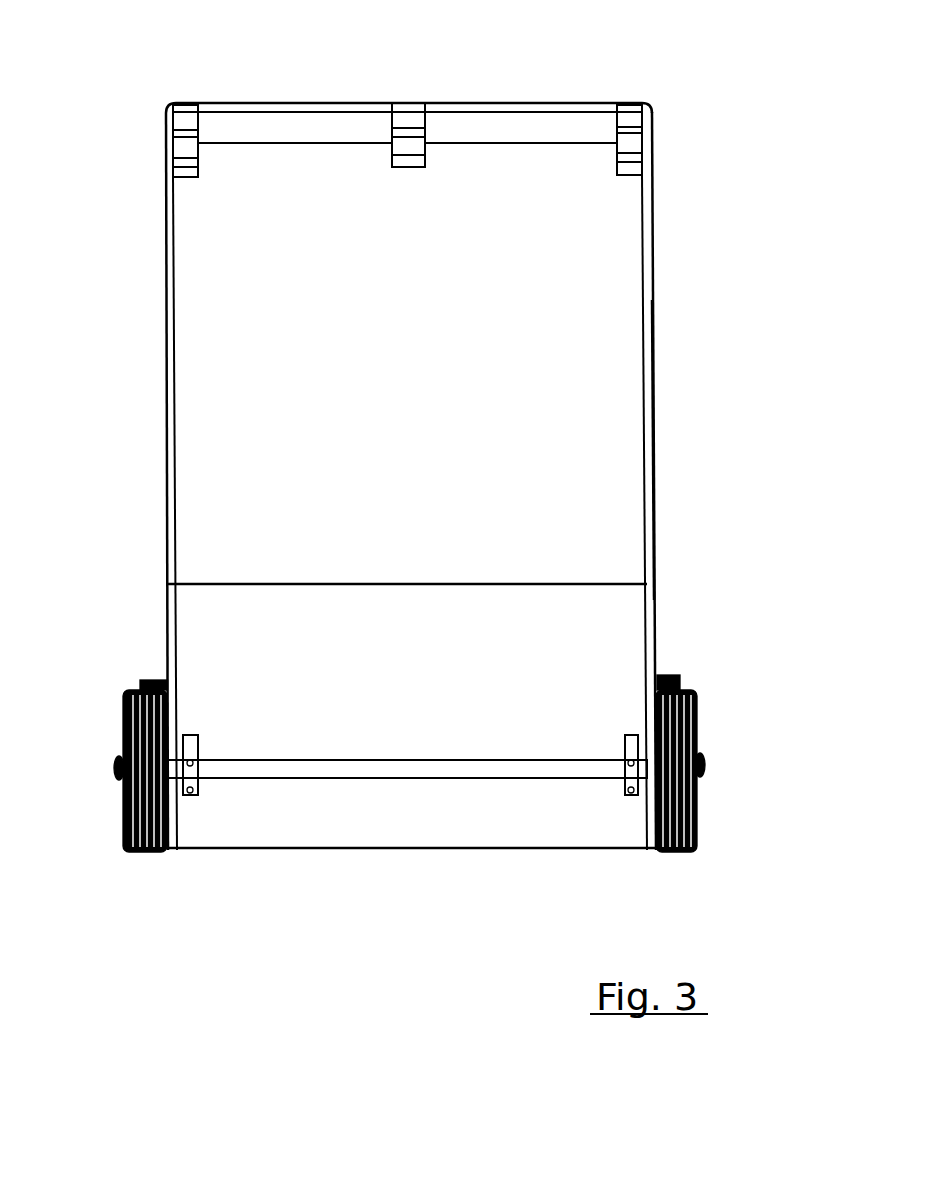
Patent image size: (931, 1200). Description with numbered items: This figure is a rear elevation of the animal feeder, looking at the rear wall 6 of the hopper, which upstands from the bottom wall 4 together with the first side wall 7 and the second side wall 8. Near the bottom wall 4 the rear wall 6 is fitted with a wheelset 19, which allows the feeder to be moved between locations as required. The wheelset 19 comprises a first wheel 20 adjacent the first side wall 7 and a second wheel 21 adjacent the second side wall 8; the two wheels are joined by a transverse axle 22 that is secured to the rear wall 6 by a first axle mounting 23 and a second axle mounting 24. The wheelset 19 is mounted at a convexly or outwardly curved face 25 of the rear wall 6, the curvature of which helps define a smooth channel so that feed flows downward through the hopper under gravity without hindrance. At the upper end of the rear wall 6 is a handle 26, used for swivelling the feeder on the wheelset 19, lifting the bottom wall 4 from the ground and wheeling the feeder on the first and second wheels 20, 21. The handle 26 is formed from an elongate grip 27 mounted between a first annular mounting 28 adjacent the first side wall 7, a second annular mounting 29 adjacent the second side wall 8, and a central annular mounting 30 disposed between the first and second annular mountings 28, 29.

The bottom wall 4 is at (400, 850).
The rear wall 6 is at (612, 346).
The first side wall 7 is at (654, 492).
The second side wall 8 is at (165, 457).
The wheelset 19 is at (707, 648).
The first wheel 20 is at (675, 852).
The second wheel 21 is at (142, 855).
The transverse axle 22 is at (290, 780).
The first axle mounting 23 is at (630, 797).
The second axle mounting 24 is at (197, 797).
The convexly or outwardly curved face 25 is at (204, 632).
The handle 26 is at (428, 103).
The elongate grip 27 is at (545, 122).
The first annular mounting 28 is at (630, 113).
The second annular mounting 29 is at (185, 122).
The central annular mounting 30 is at (393, 110).